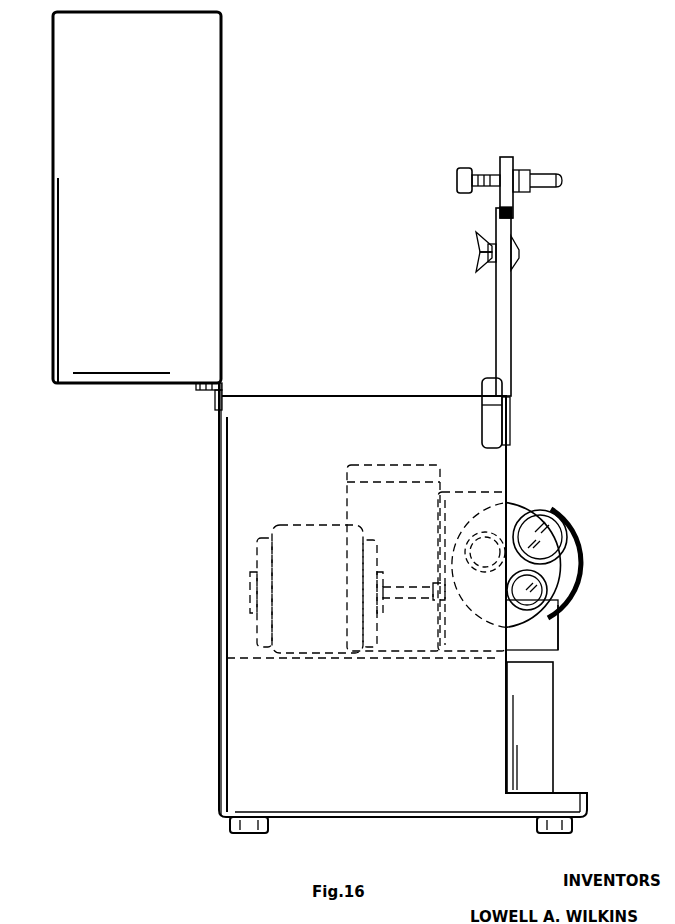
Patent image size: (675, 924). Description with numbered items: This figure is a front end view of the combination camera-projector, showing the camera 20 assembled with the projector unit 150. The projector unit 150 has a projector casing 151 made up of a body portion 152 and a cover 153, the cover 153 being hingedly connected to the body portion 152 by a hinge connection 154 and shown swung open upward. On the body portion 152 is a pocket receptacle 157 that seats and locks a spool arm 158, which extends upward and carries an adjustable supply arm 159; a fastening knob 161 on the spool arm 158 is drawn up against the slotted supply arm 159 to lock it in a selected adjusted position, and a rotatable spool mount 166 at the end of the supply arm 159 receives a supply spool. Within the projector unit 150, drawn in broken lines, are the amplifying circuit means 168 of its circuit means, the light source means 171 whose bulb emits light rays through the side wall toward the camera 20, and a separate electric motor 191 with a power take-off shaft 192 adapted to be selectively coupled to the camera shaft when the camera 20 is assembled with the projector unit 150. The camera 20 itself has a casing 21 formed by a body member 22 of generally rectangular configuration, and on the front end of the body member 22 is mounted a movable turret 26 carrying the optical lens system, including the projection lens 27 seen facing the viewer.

The camera 20 is at (582, 538).
The casing 21 is at (558, 617).
The body member 22 is at (540, 640).
The movable turret 26 is at (578, 580).
The projection lens 27 is at (553, 525).
The projector unit 150 is at (212, 506).
The projector casing 151 is at (218, 560).
The body portion 152 is at (233, 622).
The cover 153 is at (148, 357).
The hinge connection 154 is at (216, 388).
The pocket receptacle 157 is at (492, 435).
The spool arm 158 is at (512, 318).
The adjustable supply arm 159 is at (513, 214).
The fastening knob 161 is at (519, 262).
The rotatable spool mount 166 is at (535, 178).
The amplifying circuit means 168 is at (245, 748).
The light source means 171 is at (390, 490).
The electric motor 191 is at (305, 530).
The power take-off shaft 192 is at (403, 585).